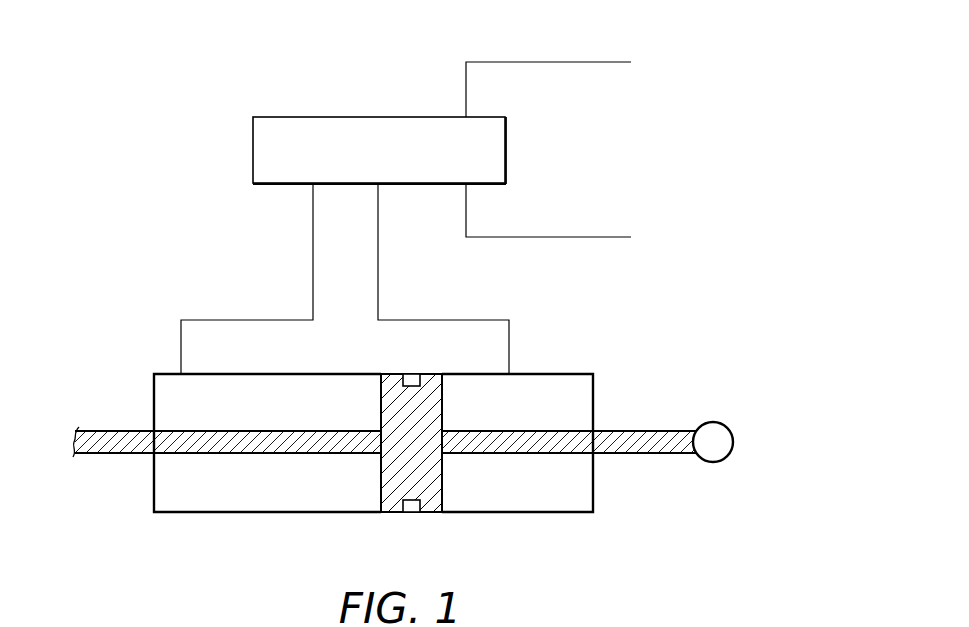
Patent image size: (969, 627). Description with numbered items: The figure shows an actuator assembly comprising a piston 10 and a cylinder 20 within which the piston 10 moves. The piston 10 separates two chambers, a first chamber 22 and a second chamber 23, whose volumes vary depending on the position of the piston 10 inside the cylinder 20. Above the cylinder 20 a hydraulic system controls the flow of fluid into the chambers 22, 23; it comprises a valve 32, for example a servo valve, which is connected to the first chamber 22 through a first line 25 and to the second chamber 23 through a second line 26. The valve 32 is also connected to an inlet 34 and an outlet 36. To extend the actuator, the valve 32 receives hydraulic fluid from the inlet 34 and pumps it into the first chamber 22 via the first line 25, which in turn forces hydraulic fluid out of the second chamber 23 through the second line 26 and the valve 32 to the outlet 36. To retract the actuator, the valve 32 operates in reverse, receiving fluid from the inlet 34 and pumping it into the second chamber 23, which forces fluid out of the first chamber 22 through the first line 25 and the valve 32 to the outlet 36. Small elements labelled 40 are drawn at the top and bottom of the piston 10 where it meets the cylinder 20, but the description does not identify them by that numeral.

The piston 10 is at (388, 400).
The cylinder 20 is at (403, 439).
The first chamber 22 is at (179, 500).
The second chamber 23 is at (583, 496).
The first line 25 is at (200, 320).
The second line 26 is at (485, 320).
The valve 32 is at (272, 117).
The inlet 34 is at (606, 62).
The outlet 36 is at (606, 237).
The seal 40 is at (413, 512).